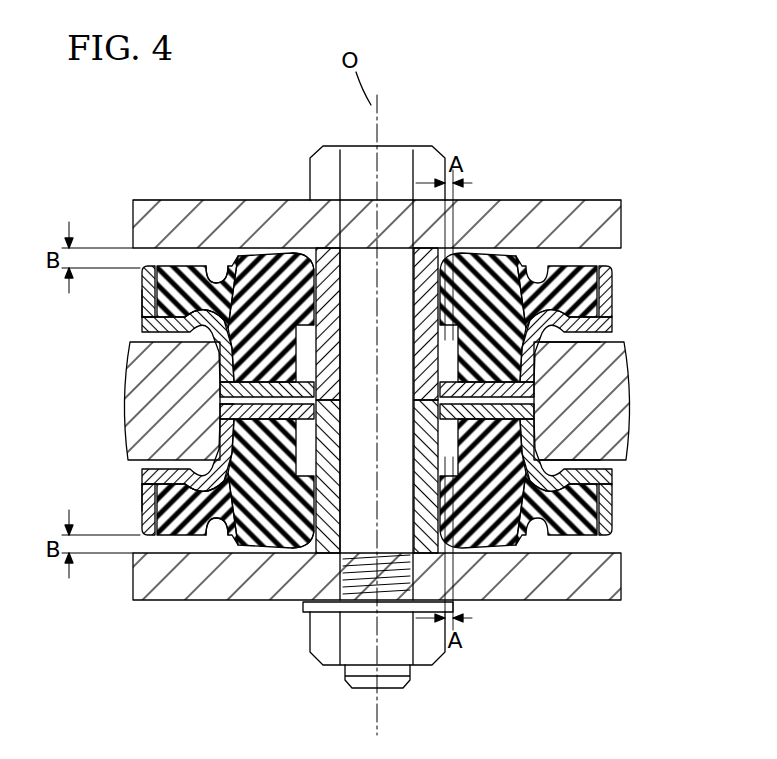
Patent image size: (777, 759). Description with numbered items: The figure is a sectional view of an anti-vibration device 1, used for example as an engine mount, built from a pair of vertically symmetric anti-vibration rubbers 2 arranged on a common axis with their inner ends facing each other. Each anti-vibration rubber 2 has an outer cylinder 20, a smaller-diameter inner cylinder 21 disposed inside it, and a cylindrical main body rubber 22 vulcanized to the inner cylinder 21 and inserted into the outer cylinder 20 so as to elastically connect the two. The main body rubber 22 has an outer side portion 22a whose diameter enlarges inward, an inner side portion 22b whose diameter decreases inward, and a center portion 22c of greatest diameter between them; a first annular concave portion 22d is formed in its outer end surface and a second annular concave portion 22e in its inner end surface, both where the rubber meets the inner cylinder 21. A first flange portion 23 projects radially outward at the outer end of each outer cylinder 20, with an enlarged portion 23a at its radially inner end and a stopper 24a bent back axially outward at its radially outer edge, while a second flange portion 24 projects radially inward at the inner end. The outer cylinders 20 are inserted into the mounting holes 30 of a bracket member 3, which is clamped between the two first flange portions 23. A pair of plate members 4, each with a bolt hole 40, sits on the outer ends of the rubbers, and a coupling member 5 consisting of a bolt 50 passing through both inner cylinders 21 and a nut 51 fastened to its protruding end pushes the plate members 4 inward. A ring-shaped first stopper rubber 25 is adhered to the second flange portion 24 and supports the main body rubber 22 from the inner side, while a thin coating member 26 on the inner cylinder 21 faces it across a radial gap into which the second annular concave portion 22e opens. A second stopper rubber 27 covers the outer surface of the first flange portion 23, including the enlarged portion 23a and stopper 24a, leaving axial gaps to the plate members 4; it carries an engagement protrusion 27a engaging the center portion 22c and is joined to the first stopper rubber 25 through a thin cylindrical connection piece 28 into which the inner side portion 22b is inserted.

The anti-vibration device 1 is at (645, 128).
The anti-vibration rubber 2 is at (658, 292).
The bracket member 3 is at (634, 456).
The plate member 4 is at (622, 222).
The coupling member 5 is at (436, 140).
The outer cylinder 20 is at (195, 368).
The inner cylinder 21 is at (318, 290).
The main body rubber 22 is at (238, 255).
The outer side portion 22a is at (530, 272).
The inner side portion 22b is at (523, 318).
The center portion 22c is at (537, 300).
The first annular concave portion 22d is at (460, 268).
The second annular concave portion 22e is at (560, 345).
The first flange portion 23 is at (152, 327).
The enlarged portion 23a is at (215, 333).
The second flange portion 24 is at (240, 410).
The stopper 24a is at (148, 302).
The first stopper rubber 25 is at (271, 347).
The coating member 26 is at (530, 420).
The second stopper rubber 27 is at (148, 283).
The engagement protrusion 27a is at (222, 305).
The connection piece 28 is at (216, 275).
The mounting hole 30 is at (262, 460).
The bolt hole 40 is at (412, 225).
The bolt 50 is at (355, 150).
The nut 51 is at (323, 657).